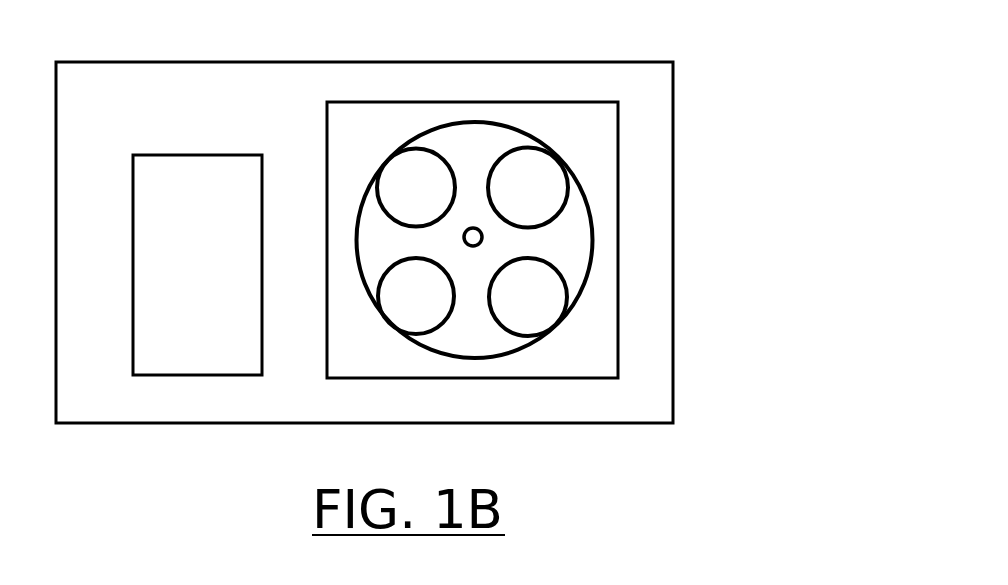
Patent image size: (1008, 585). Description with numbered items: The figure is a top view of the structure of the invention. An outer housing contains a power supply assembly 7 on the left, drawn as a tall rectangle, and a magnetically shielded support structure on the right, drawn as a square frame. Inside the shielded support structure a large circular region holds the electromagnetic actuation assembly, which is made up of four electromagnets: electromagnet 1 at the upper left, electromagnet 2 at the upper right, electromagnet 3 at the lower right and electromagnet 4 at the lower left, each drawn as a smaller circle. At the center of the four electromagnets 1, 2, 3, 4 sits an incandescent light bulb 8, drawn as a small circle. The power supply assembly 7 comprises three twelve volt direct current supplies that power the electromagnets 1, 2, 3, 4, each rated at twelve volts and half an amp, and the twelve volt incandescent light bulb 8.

The power supply assembly 7 is at (230, 200).
The incandescent light bulb 8 is at (485, 238).
The electromagnet 1 is at (402, 182).
The electromagnet 2 is at (548, 190).
The electromagnet 3 is at (550, 292).
The electromagnet 4 is at (398, 285).